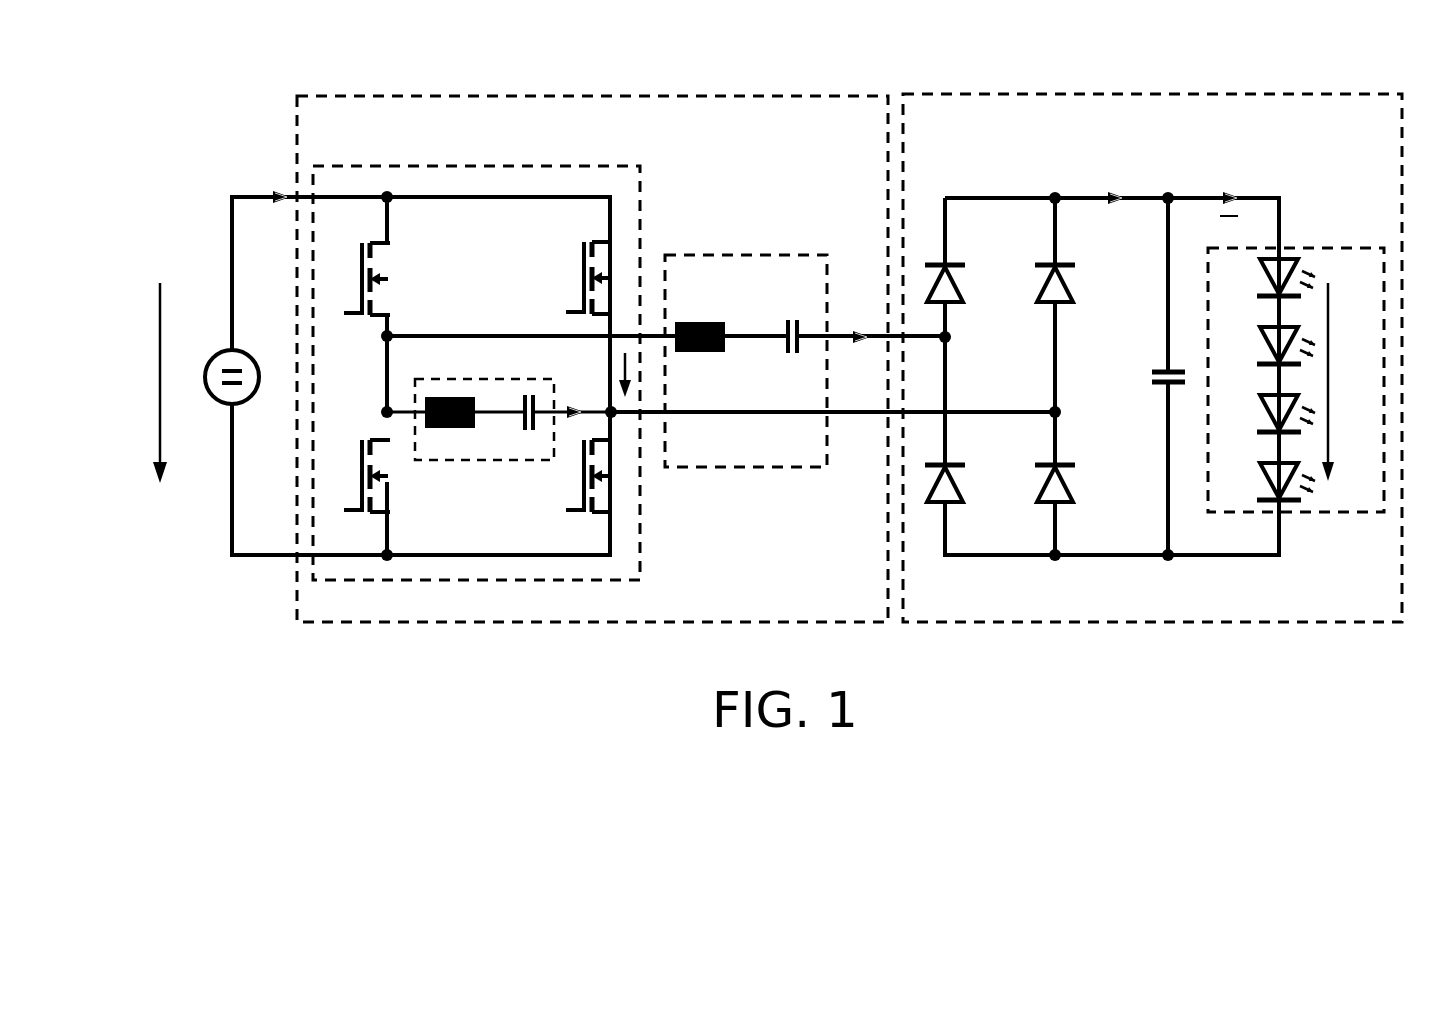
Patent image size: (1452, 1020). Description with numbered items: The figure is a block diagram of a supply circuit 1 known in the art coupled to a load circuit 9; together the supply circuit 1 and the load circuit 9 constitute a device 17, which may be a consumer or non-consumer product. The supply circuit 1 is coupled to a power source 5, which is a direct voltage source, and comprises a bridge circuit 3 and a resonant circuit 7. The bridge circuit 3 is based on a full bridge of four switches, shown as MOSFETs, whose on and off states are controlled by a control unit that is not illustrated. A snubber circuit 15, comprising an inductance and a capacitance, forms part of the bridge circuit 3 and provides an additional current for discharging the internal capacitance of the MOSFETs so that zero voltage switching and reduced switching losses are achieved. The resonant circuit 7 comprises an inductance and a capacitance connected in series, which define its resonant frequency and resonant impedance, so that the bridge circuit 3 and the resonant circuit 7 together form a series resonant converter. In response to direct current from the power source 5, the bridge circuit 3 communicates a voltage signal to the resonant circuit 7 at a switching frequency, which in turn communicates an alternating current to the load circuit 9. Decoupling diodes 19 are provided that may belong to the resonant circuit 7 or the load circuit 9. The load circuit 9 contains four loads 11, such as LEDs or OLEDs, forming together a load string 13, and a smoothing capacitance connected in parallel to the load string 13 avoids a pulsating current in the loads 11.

The device 17 is at (222, 100).
The supply circuit 1 is at (614, 95).
The bridge circuit 3 is at (468, 165).
The power source 5 is at (216, 350).
The resonant circuit 7 is at (743, 254).
The load circuit 9 is at (1139, 94).
The load 11 is at (1262, 272).
The load string 13 is at (1341, 248).
The snubber circuit 15 is at (483, 462).
The decoupling diodes 19 is at (1040, 282).